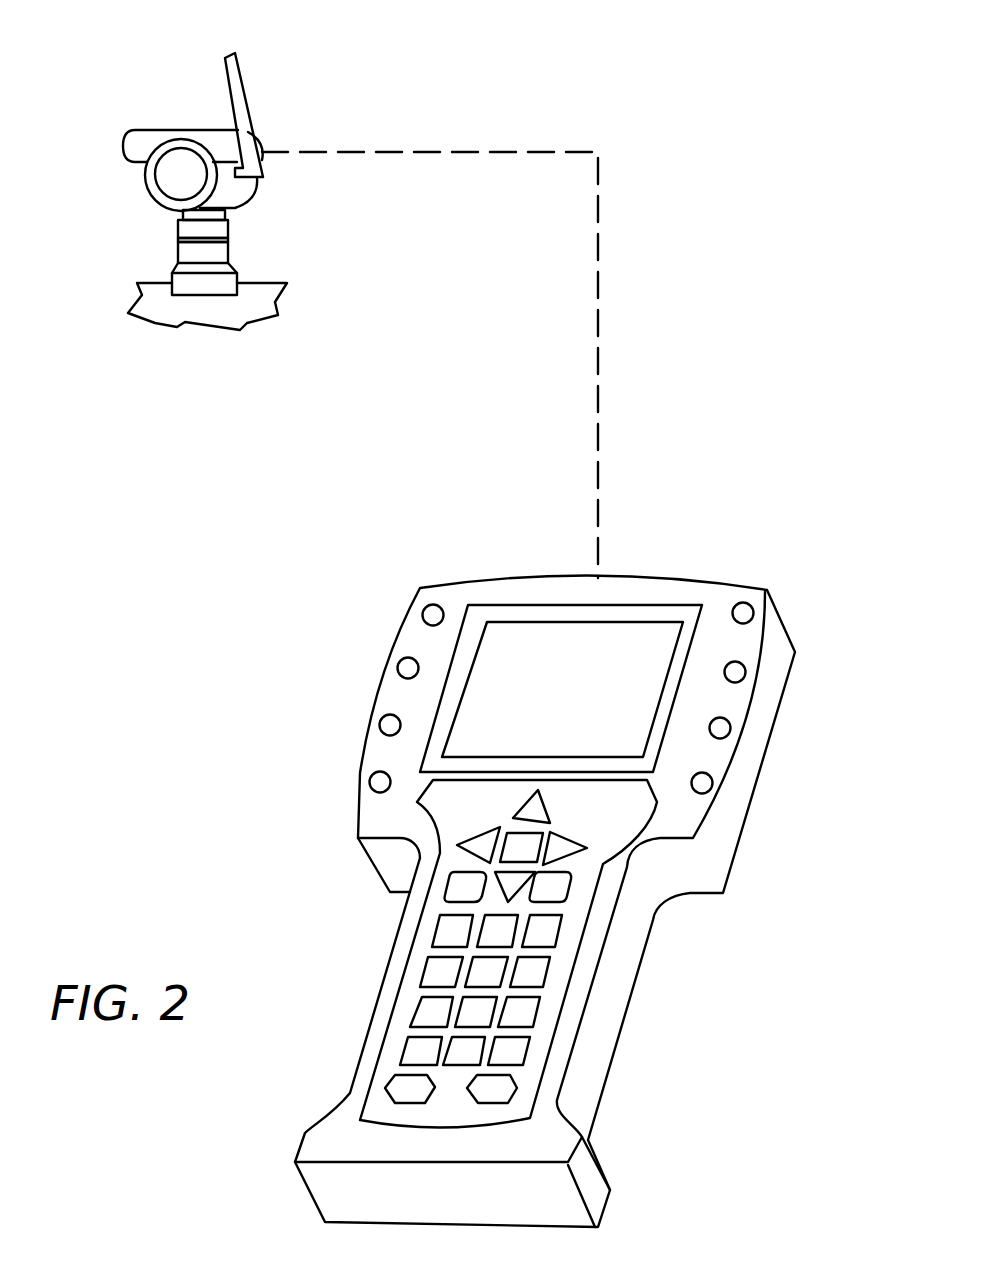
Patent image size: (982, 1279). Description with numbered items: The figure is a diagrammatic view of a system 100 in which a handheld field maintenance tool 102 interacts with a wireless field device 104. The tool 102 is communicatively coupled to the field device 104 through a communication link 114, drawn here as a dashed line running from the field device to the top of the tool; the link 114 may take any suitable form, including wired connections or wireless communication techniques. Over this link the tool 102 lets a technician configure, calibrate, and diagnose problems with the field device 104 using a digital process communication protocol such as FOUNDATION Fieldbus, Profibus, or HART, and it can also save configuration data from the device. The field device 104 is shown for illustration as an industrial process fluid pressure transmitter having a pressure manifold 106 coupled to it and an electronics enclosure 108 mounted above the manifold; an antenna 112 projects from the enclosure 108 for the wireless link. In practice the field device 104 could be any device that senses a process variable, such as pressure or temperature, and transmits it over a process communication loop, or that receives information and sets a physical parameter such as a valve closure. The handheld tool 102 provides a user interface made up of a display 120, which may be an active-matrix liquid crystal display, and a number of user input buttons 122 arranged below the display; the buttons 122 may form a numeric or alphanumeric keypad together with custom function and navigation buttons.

The system 100 is at (260, 664).
The handheld field maintenance tool 102 is at (750, 850).
The field device 104 is at (225, 285).
The pressure manifold 106 is at (165, 308).
The electronics enclosure 108 is at (233, 190).
The antenna 112 is at (243, 83).
The communication link 114 is at (600, 342).
The display 120 is at (612, 615).
The user input buttons 122 is at (545, 937).